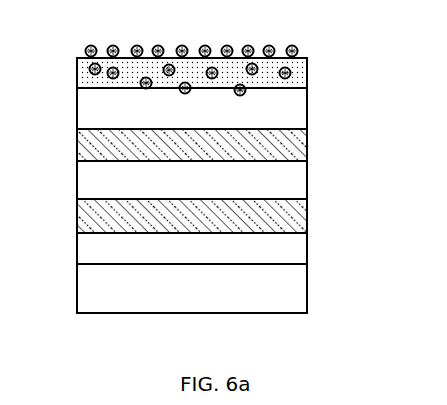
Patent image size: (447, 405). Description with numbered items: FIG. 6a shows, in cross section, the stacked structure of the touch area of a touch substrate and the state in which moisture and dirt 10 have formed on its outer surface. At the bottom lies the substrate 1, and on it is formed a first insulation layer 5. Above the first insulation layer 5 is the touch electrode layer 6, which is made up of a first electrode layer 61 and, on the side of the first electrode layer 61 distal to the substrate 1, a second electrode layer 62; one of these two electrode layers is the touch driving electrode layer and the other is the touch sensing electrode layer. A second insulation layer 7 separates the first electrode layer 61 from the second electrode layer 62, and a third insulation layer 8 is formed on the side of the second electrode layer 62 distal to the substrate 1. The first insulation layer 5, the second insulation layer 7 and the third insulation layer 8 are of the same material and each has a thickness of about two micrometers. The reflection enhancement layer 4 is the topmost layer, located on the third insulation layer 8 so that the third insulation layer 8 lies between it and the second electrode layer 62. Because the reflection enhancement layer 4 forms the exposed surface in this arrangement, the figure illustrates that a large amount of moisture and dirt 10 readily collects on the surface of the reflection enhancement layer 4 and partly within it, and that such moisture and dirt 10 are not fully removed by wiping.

The substrate 1 is at (210, 305).
The first insulation layer 5 is at (300, 253).
The touch electrode layer 6 is at (205, 181).
The first electrode layer 61 is at (293, 210).
The second insulation layer 7 is at (92, 178).
The second electrode layer 62 is at (288, 143).
The third insulation layer 8 is at (92, 103).
The reflection enhancement layer 4 is at (296, 73).
The moisture and dirt 10 is at (271, 45).